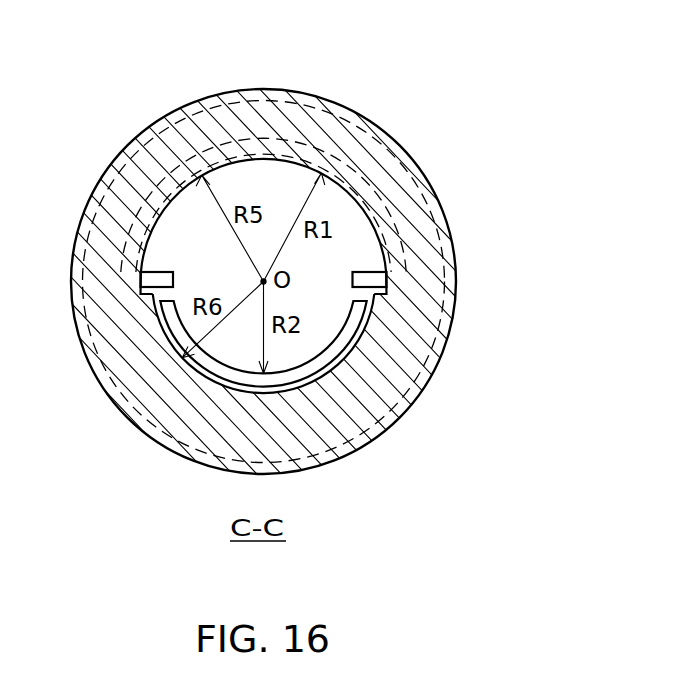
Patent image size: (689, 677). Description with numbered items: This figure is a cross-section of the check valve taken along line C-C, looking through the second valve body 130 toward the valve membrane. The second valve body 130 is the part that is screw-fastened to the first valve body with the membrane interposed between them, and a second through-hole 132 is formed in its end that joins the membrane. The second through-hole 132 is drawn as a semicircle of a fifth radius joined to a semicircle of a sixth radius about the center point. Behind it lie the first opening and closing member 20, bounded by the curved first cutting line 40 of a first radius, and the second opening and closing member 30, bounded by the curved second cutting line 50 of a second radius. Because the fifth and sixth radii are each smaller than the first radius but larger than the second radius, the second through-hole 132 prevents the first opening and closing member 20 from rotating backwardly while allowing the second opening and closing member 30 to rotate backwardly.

The first opening and closing member 20 is at (351, 222).
The second opening and closing member 30 is at (328, 312).
The first cutting line 40 is at (290, 88).
The second cutting line 50 is at (318, 360).
The second valve body 130 is at (433, 188).
The second through-hole 132 is at (378, 237).